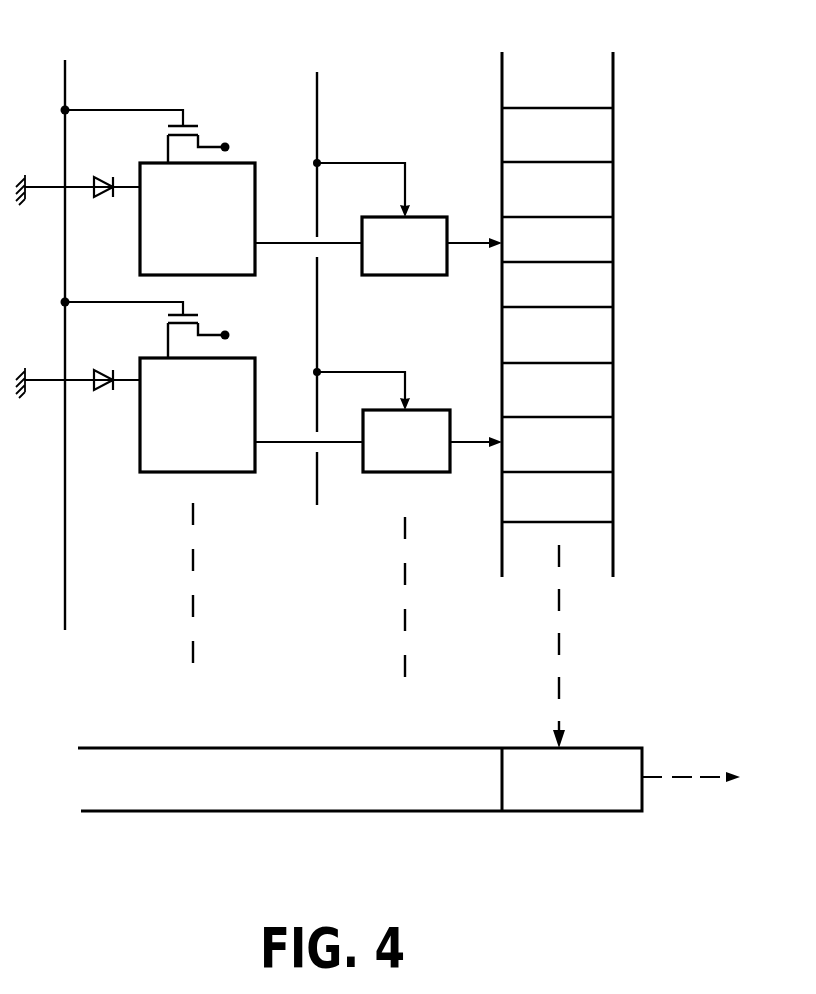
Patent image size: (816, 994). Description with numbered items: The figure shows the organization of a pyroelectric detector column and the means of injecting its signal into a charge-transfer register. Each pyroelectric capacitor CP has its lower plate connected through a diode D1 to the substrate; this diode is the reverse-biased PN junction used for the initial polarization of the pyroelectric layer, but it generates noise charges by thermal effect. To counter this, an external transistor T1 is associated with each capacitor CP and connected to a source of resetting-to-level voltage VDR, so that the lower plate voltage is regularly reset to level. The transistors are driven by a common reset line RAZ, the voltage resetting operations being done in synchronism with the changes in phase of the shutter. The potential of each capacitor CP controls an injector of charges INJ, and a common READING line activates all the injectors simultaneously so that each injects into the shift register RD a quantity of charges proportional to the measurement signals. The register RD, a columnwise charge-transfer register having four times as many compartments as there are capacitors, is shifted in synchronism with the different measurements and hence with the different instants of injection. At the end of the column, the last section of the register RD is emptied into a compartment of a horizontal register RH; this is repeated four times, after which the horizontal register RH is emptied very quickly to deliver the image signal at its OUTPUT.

The voltage resetting operation RAZ is at (64, 330).
The reading control line READING is at (360, 266).
The external transistor T1 is at (190, 124).
The source of resetting-to-level voltage VDR is at (249, 229).
The diode D1 is at (112, 176).
The pyroelectric capacitor CP is at (140, 222).
The injector of charges INJ is at (400, 277).
The shift register RD is at (617, 143).
The horizontal register RH is at (398, 813).
The output OUTPUT is at (719, 762).